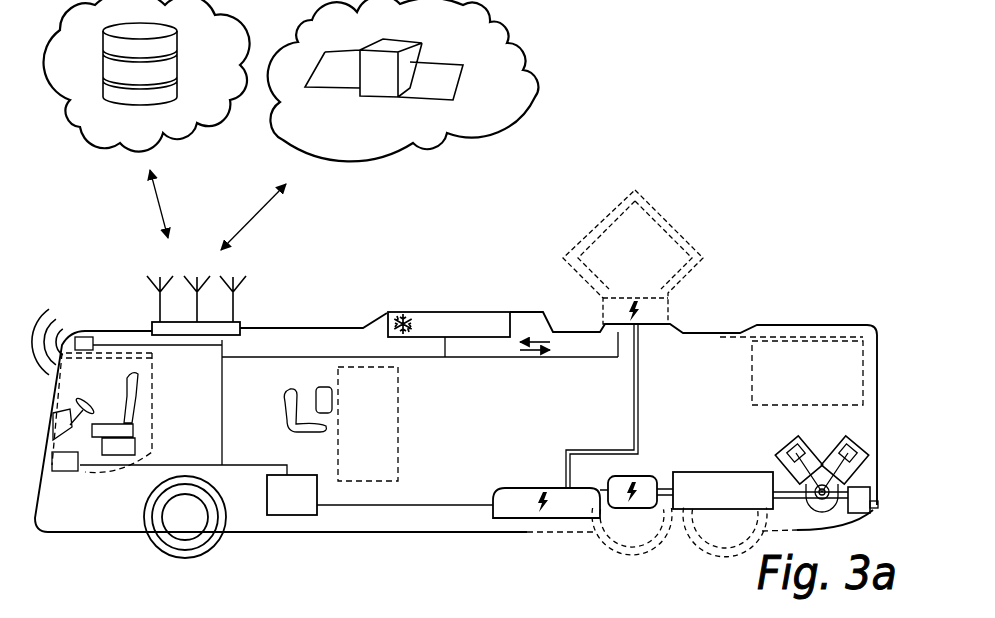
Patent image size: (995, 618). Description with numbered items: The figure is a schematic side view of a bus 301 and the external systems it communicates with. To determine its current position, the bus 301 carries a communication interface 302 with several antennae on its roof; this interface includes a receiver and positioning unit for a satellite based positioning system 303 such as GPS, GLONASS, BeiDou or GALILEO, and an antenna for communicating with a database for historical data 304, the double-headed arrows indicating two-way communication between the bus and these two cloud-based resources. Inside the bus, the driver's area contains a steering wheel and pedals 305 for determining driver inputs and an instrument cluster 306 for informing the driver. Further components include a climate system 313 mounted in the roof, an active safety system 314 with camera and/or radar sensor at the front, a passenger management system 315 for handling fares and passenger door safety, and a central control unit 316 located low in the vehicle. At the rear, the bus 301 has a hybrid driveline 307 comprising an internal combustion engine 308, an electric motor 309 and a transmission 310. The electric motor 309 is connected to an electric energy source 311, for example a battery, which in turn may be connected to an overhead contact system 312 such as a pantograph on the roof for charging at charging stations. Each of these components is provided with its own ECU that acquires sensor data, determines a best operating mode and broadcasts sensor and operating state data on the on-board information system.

The bus 301 is at (764, 205).
The communication interface 302 is at (151, 323).
The satellite based positioning system 303 is at (362, 141).
The database for historical data 304 is at (232, 72).
The steering wheel and pedals 305 is at (63, 472).
The instrument cluster 306 is at (60, 425).
The hybrid driveline 307 is at (804, 372).
The internal combustion engine 308 is at (857, 445).
The electric motor 309 is at (644, 476).
The transmission 310 is at (727, 470).
The electric energy source 311 is at (563, 488).
The overhead contact system 312 is at (680, 277).
The climate system 313 is at (427, 324).
The active safety system 314 is at (83, 337).
The passenger management system 315 is at (319, 385).
The central control unit 316 is at (300, 515).